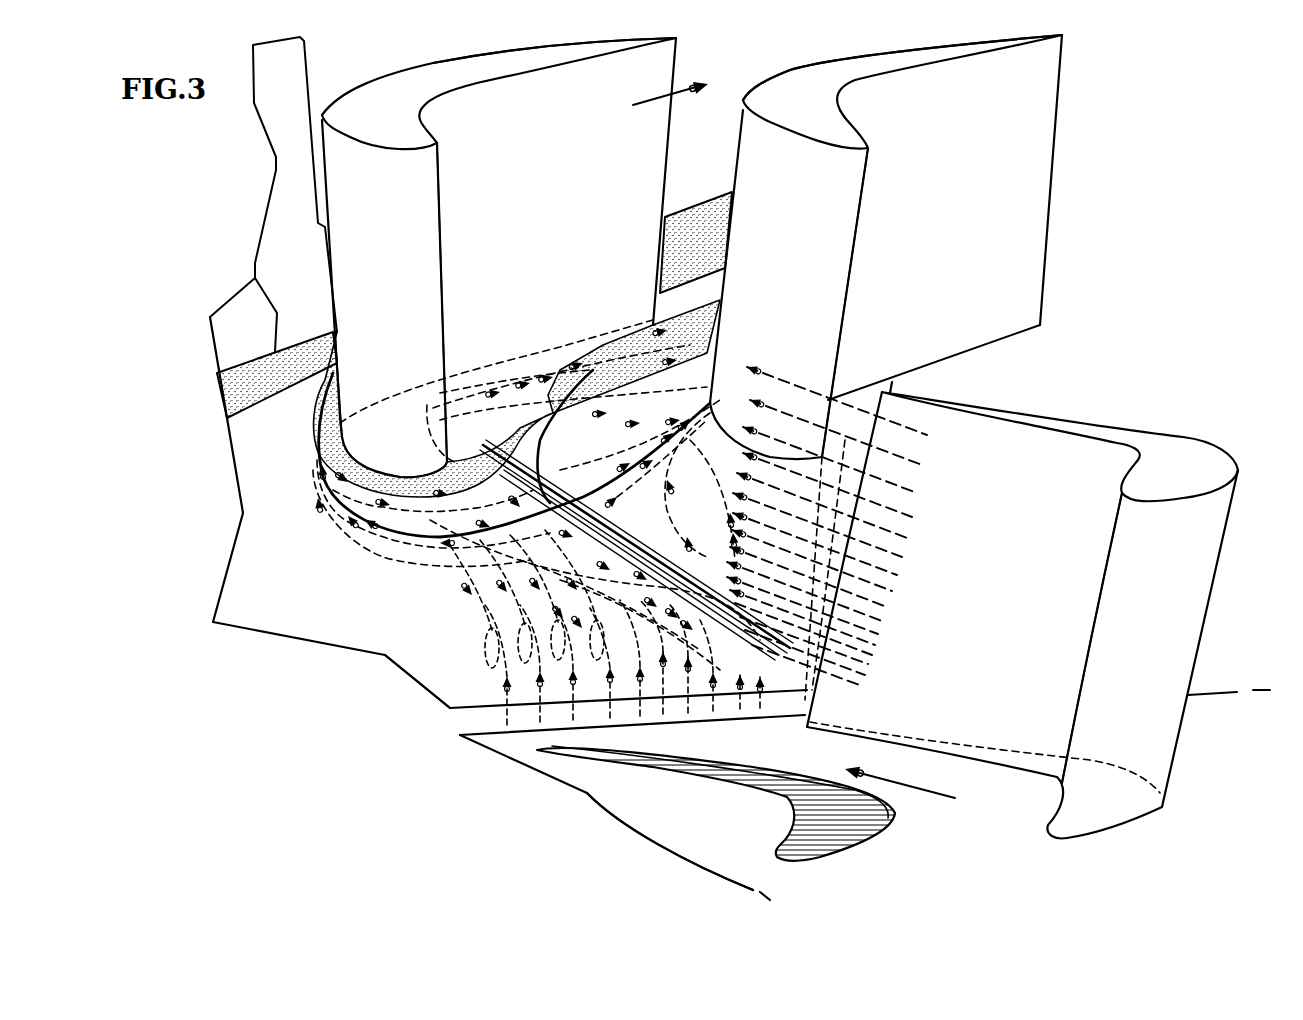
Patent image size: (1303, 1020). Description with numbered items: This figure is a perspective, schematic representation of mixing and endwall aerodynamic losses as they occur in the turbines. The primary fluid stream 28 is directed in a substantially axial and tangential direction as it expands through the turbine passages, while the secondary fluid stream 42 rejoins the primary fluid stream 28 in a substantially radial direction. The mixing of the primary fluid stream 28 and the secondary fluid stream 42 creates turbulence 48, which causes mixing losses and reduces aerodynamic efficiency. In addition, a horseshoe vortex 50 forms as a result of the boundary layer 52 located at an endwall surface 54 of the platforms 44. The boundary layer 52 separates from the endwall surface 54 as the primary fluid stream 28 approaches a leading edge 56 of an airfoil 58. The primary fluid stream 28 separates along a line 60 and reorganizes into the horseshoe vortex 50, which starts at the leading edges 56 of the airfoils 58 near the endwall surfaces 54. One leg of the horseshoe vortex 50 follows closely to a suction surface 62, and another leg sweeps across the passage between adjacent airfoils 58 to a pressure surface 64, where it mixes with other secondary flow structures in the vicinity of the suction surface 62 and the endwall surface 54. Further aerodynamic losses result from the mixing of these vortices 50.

The primary fluid stream 28 is at (700, 80).
The secondary fluid stream 42 is at (507, 715).
The platforms 44 is at (313, 594).
The turbulence 48 is at (485, 632).
The horseshoe vortex 50 is at (547, 480).
The boundary layer 52 is at (797, 385).
The endwall surface 54 is at (378, 640).
The leading edge 56 is at (430, 170).
The airfoil 58 is at (558, 234).
The line 60 is at (490, 505).
The suction surface 62 is at (817, 66).
The pressure surface 64 is at (503, 78).